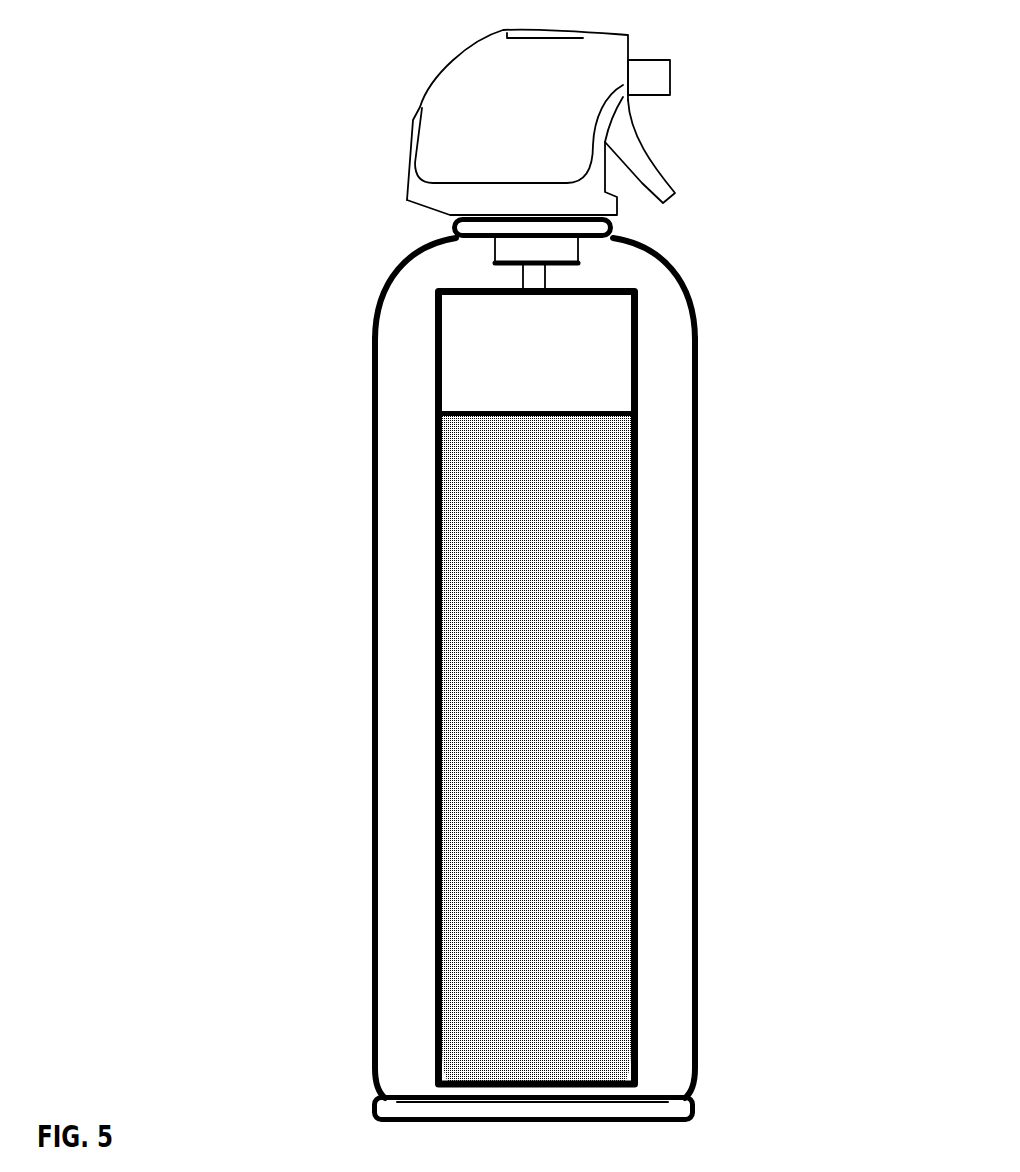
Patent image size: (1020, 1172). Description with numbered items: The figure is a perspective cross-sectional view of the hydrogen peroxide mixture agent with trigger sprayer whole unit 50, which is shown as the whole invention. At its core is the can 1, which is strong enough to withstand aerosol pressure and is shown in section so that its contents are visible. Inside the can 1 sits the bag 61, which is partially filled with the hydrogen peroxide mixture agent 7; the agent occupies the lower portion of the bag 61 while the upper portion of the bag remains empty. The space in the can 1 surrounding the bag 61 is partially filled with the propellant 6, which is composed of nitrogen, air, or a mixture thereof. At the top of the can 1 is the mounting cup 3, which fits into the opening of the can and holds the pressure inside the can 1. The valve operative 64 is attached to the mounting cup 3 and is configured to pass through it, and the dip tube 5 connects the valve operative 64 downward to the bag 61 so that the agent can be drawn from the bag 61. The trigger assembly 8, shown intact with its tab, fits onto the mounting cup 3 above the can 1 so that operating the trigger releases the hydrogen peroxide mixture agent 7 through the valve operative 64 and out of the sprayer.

The can 1 is at (697, 625).
The mounting cup 3 is at (613, 220).
The dip tube 5 is at (545, 277).
The propellant 6 is at (415, 500).
The hydrogen peroxide mixture agent 7 is at (478, 808).
The trigger assembly 8 is at (413, 107).
The hydrogen peroxide mixture agent with trigger sprayer whole unit 50 is at (383, 265).
The bag 61 is at (638, 359).
The valve operative 64 is at (578, 248).